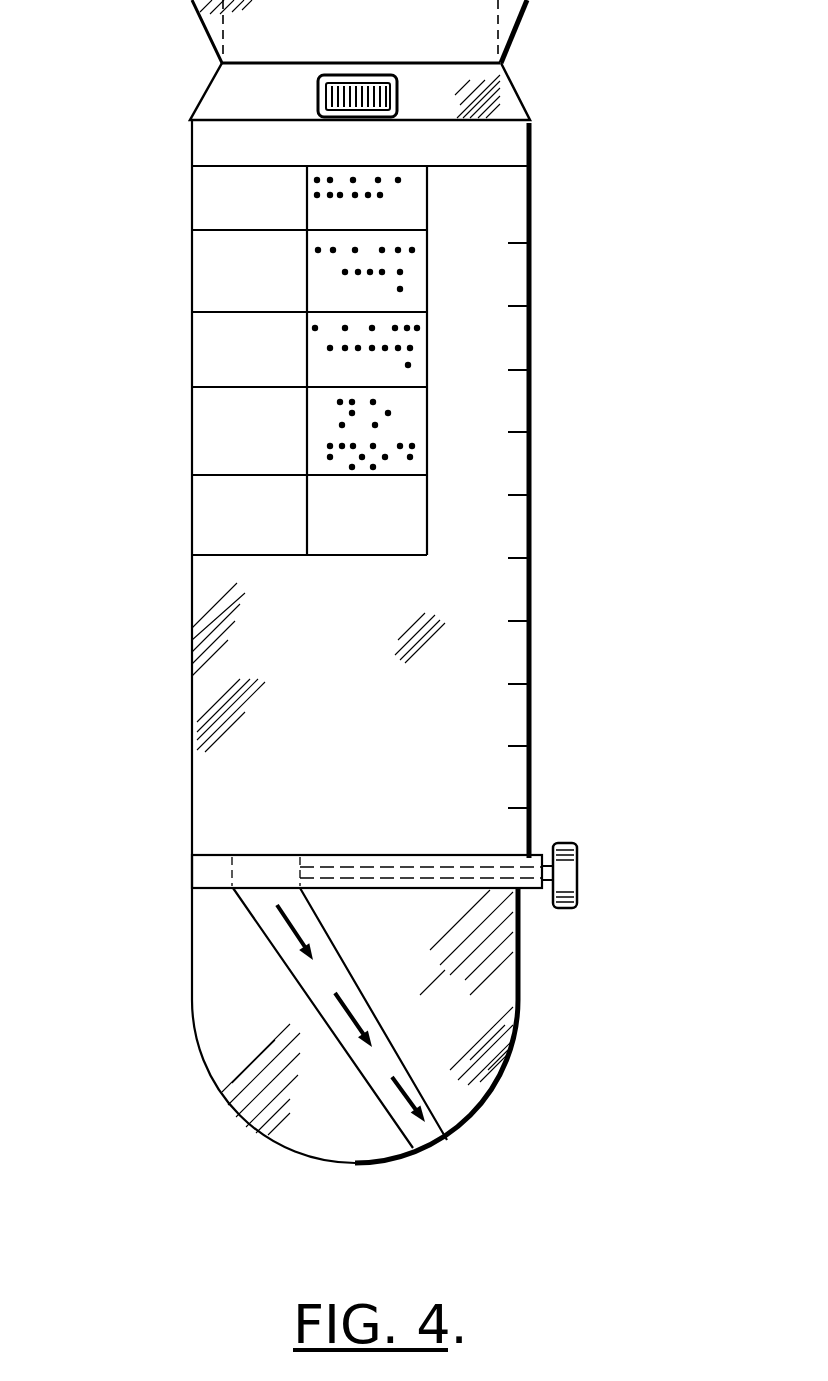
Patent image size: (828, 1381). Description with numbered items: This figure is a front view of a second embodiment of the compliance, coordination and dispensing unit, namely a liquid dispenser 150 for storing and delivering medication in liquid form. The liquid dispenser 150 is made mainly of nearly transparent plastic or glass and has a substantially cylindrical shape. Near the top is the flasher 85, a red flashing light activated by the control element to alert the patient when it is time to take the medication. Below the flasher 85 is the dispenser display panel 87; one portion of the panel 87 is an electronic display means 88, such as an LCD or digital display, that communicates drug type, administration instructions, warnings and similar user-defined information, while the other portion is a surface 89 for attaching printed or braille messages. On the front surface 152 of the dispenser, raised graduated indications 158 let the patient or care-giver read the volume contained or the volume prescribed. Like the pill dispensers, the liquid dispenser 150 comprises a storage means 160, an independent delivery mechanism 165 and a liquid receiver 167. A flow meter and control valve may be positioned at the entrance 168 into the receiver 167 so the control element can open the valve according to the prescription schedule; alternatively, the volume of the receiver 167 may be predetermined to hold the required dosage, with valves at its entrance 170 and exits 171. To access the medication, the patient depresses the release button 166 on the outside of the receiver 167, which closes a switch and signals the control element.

The flasher 85 is at (375, 82).
The dispenser display panel 87 is at (200, 327).
The electronic display means 88 is at (182, 248).
The surface 89 is at (412, 208).
The liquid dispenser 150 is at (552, 281).
The front surface 152 is at (247, 642).
The raised graduated indications 158 is at (532, 803).
The storage means 160 is at (275, 584).
The independent delivery mechanism 165 is at (388, 976).
The release button 166 is at (570, 865).
The liquid receiver 167 is at (285, 937).
The entrance 168 is at (232, 873).
The entrance 170 is at (265, 866).
The exits 171 is at (430, 1125).